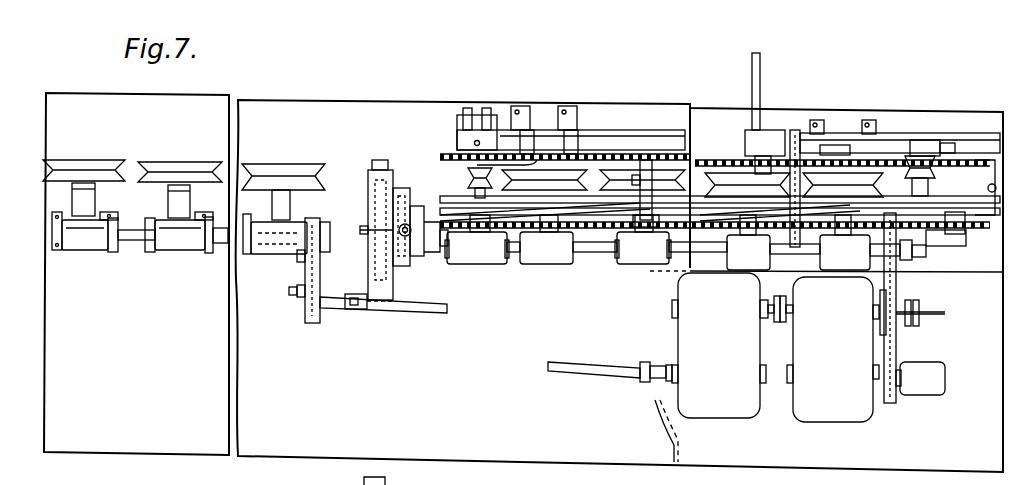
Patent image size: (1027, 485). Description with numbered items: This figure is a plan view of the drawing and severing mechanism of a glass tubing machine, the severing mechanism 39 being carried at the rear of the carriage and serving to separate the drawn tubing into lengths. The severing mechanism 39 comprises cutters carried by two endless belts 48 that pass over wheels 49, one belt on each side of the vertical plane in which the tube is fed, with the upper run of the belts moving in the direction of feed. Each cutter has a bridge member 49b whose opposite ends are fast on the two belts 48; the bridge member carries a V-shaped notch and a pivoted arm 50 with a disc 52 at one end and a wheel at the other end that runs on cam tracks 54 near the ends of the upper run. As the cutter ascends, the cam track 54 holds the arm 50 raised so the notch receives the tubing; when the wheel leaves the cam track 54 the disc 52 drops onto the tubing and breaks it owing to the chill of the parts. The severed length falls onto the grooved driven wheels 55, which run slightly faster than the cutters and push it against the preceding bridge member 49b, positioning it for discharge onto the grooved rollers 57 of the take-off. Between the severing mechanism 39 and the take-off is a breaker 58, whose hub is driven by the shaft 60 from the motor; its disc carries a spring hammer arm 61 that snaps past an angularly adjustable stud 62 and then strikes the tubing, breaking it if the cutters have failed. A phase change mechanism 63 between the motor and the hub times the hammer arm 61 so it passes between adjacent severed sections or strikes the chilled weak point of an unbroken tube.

The severing mechanism 39 is at (872, 228).
The endless belts 48 is at (618, 154).
The wheels 49 is at (968, 237).
The bridge member 49b is at (988, 168).
The arm 50 is at (965, 218).
The disc 52 is at (636, 157).
The cam tracks 54 is at (450, 207).
The grooved driven wheels 55 is at (568, 178).
The grooved rollers 57 is at (291, 178).
The breaker 58 is at (382, 173).
The shaft 60 is at (430, 248).
The spring hammer arm 61 is at (378, 205).
The stud 62 is at (390, 177).
The phase change mechanism 63 is at (403, 260).